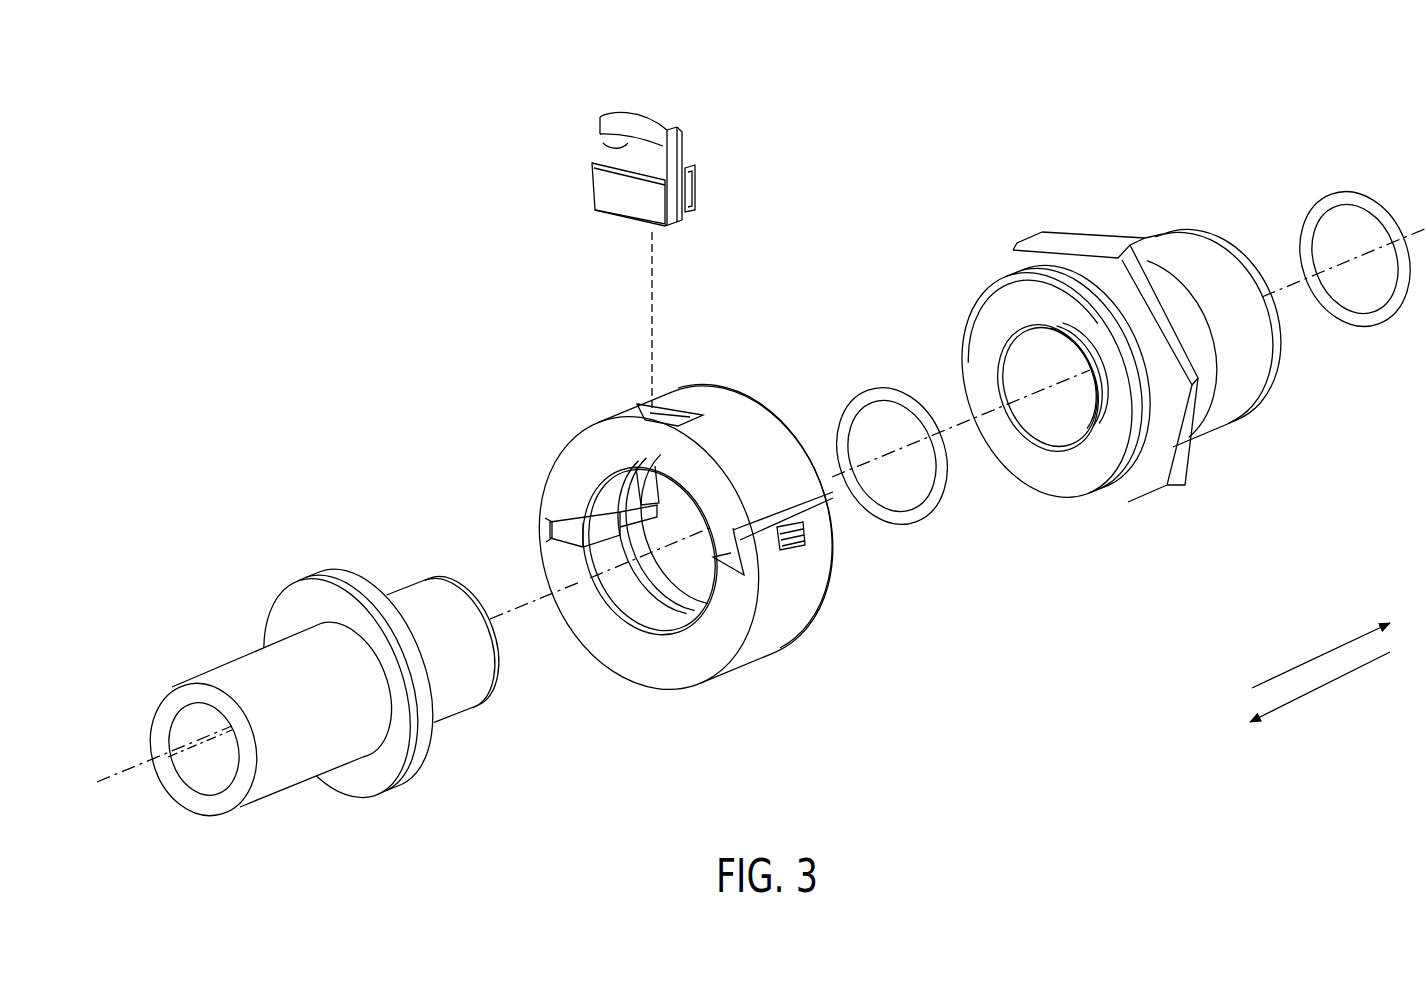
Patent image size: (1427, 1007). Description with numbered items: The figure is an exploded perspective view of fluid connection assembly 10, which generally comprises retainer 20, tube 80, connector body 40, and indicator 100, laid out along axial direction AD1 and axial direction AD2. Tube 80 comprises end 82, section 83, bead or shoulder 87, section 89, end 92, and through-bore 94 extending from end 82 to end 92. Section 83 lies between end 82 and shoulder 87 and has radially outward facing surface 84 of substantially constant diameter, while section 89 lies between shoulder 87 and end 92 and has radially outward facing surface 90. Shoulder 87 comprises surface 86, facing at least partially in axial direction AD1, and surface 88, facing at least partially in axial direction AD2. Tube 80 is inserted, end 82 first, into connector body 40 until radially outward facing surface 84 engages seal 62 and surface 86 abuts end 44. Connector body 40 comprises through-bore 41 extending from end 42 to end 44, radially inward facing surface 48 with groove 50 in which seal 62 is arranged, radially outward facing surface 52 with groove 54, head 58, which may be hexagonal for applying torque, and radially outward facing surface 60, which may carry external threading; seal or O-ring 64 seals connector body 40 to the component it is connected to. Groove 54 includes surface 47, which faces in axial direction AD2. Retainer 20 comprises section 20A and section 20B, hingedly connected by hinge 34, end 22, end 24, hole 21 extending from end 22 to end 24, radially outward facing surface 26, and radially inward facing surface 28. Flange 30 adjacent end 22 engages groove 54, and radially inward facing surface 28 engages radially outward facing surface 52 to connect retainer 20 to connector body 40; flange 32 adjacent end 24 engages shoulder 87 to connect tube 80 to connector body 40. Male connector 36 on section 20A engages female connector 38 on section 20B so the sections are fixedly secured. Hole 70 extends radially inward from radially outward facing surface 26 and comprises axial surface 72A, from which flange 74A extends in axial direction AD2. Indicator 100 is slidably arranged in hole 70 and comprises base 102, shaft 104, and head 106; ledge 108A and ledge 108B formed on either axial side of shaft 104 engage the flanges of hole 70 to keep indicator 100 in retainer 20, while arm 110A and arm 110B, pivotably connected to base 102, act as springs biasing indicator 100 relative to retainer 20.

The fluid connection assembly 10 is at (290, 182).
The retainer 20 is at (750, 705).
The section 20A is at (797, 473).
The section 20B is at (690, 665).
The hole 21 is at (660, 620).
The end 22 is at (725, 388).
The end 24 is at (563, 572).
The radially outward facing surface 26 is at (770, 420).
The radially inward facing surface 28 is at (632, 605).
The flange 30 is at (633, 507).
The flange 32 is at (613, 586).
The hinge 34 is at (540, 520).
The male connector 36 is at (808, 530).
The female connector 38 is at (797, 540).
The connector body 40 is at (1027, 200).
The through-bore 41 is at (1030, 433).
The end 42 is at (1247, 265).
The end 44 is at (995, 318).
The surface 47 is at (1133, 492).
The radially inward facing surface 48 is at (1070, 440).
The groove 50 is at (1040, 376).
The radially outward facing surface 52 is at (1013, 251).
The groove 54 is at (1155, 385).
The head 58 is at (1085, 240).
The radially outward facing surface 60 is at (1180, 240).
The seal 62 is at (912, 545).
The seal 64 is at (1362, 355).
The hole 70 is at (628, 407).
The axial surface 72A is at (672, 410).
The flange 74A is at (656, 412).
The tube 80 is at (220, 475).
The end 82 is at (453, 585).
The section 83 is at (468, 748).
The radially outward facing surface 84 is at (413, 595).
The surface 86 is at (355, 585).
The shoulder 87 is at (410, 781).
The surface 88 is at (297, 607).
The section 89 is at (288, 808).
The radially outward facing surface 90 is at (238, 673).
The end 92 is at (205, 798).
The through-bore 94 is at (195, 728).
The indicator 100 is at (595, 88).
The base 102 is at (683, 222).
The shaft 104 is at (677, 158).
The head 106 is at (677, 123).
The ledge 108A is at (682, 140).
The ledge 108B is at (600, 143).
The arm 110A is at (697, 188).
The arm 110B is at (605, 193).
The axial direction AD1 is at (1330, 650).
The axial direction AD2 is at (1330, 683).